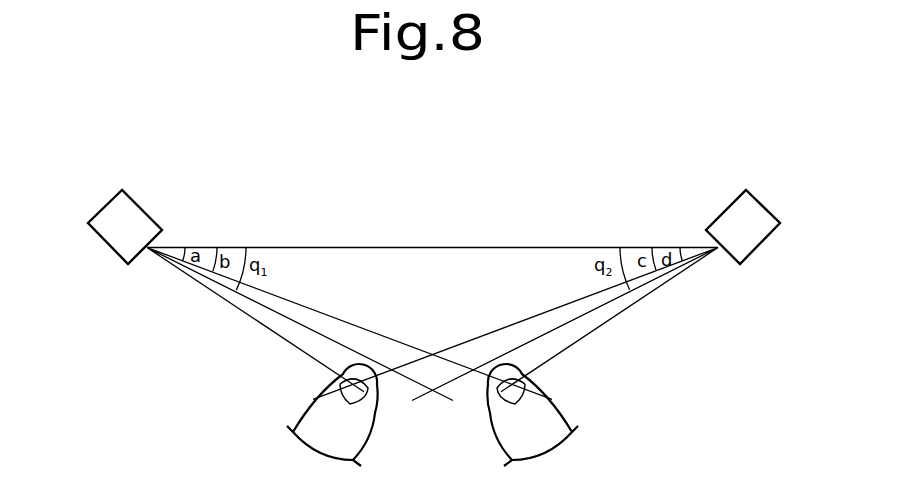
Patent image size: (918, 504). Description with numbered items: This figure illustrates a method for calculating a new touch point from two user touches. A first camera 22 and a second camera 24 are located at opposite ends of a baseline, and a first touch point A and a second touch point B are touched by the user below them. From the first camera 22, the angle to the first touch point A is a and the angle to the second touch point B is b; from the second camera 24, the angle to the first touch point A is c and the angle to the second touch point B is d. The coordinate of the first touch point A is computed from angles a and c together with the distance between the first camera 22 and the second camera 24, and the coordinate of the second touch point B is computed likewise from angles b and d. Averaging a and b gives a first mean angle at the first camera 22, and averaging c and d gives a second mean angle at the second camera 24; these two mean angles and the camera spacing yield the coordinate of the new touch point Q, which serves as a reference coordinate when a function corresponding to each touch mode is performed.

The first camera 22 is at (122, 190).
The second camera 24 is at (746, 190).
The first touch point A is at (360, 387).
The second touch point B is at (505, 387).
The new touch point Q is at (434, 391).